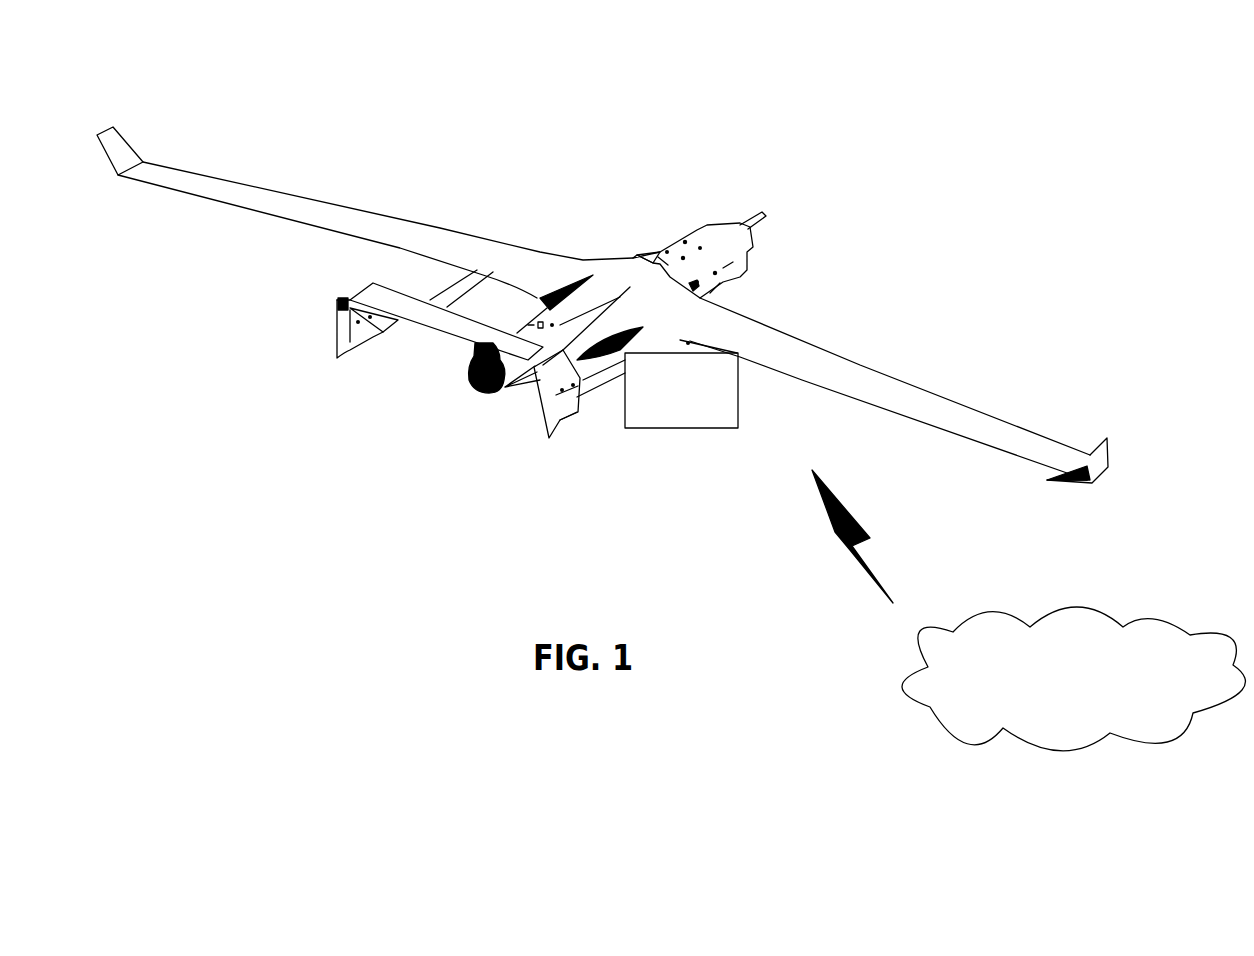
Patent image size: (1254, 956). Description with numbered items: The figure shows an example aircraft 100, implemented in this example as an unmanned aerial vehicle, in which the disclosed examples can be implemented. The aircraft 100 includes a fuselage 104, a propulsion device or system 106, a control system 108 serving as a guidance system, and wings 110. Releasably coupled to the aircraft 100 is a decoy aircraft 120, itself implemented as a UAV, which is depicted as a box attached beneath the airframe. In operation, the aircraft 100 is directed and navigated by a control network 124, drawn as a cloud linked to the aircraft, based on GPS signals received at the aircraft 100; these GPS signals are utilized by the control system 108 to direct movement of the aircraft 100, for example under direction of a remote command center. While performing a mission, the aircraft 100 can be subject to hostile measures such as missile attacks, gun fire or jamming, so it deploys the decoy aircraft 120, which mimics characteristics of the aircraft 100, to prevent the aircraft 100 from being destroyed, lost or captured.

The aircraft 100 is at (441, 80).
The fuselage 104 is at (693, 235).
The propulsion device or system 106 is at (473, 393).
The control system 108 is at (740, 227).
The wings 110 is at (263, 212).
The decoy aircraft 120 is at (638, 428).
The control network 124 is at (1068, 607).